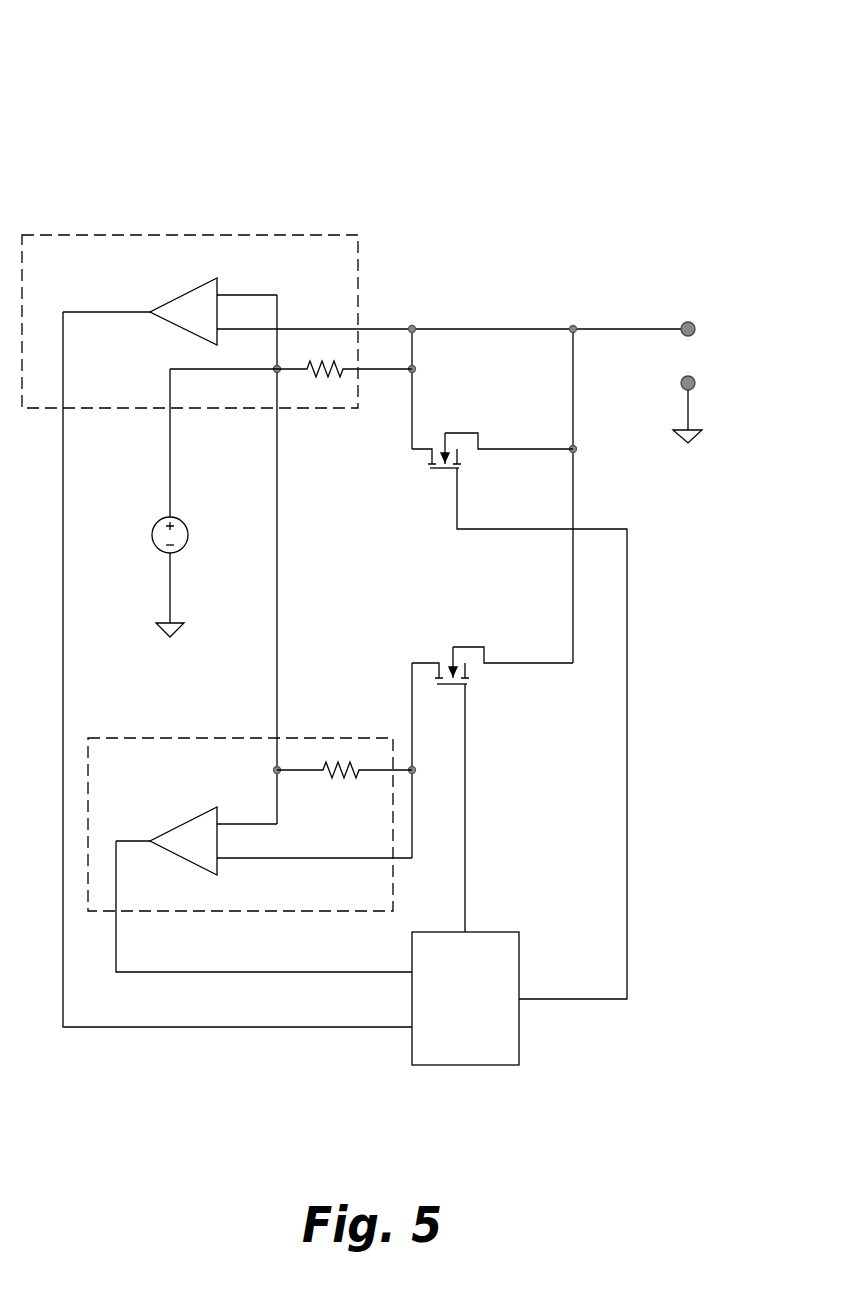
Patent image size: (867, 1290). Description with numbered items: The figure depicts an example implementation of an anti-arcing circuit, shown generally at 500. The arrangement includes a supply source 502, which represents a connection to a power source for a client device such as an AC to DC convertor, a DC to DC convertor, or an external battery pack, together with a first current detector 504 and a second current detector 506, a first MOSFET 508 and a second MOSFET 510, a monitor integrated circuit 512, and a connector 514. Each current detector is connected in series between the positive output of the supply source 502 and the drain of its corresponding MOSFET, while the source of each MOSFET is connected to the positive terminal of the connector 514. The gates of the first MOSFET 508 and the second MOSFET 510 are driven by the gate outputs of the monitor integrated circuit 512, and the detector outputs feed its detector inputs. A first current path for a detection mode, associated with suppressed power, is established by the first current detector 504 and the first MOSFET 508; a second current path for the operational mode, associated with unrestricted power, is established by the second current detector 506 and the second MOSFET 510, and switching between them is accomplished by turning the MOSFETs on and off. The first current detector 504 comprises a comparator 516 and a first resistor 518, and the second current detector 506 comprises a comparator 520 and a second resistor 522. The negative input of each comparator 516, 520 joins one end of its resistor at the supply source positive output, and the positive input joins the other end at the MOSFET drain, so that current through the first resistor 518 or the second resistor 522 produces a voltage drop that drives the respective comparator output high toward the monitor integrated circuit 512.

The anti-arcing circuit implementation 500 is at (88, 38).
The supply source 502 is at (105, 584).
The current detector CD1 504 is at (151, 707).
The current detector CD2 506 is at (141, 213).
The MOSFET Q1 508 is at (415, 614).
The MOSFET Q2 510 is at (431, 397).
The monitor integrated circuit 512 is at (446, 977).
The connector 514 is at (705, 366).
The comparator 516 is at (156, 800).
The resistor R1 518 is at (322, 825).
The comparator 520 is at (121, 290).
The resistor R2 522 is at (311, 437).